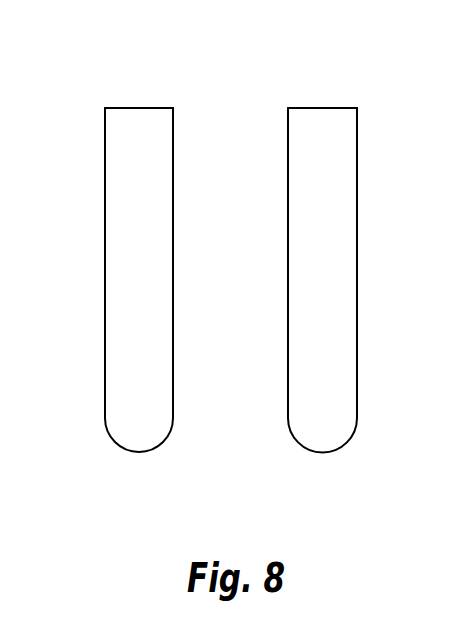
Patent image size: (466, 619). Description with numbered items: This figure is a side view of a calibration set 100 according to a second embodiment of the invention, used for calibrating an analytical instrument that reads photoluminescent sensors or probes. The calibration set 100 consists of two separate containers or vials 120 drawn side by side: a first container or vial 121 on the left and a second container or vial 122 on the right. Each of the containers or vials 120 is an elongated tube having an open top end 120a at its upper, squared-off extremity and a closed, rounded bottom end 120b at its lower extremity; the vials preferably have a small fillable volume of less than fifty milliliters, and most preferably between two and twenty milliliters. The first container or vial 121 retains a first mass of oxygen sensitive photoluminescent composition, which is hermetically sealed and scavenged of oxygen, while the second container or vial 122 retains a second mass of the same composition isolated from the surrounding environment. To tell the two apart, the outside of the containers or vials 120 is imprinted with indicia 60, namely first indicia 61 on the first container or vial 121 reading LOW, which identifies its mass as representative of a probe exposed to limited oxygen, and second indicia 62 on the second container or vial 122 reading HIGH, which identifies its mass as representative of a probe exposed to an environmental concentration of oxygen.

The calibration set 100 is at (102, 70).
The containers or vials 120 is at (110, 239).
The first container or vial 121 is at (110, 167).
The second container or vial 122 is at (350, 239).
The open top end 120a is at (139, 108).
The closed bottom end 120b is at (135, 453).
The indicia 60 is at (119, 317).
The first indicia 61 is at (119, 351).
The second indicia 62 is at (340, 351).